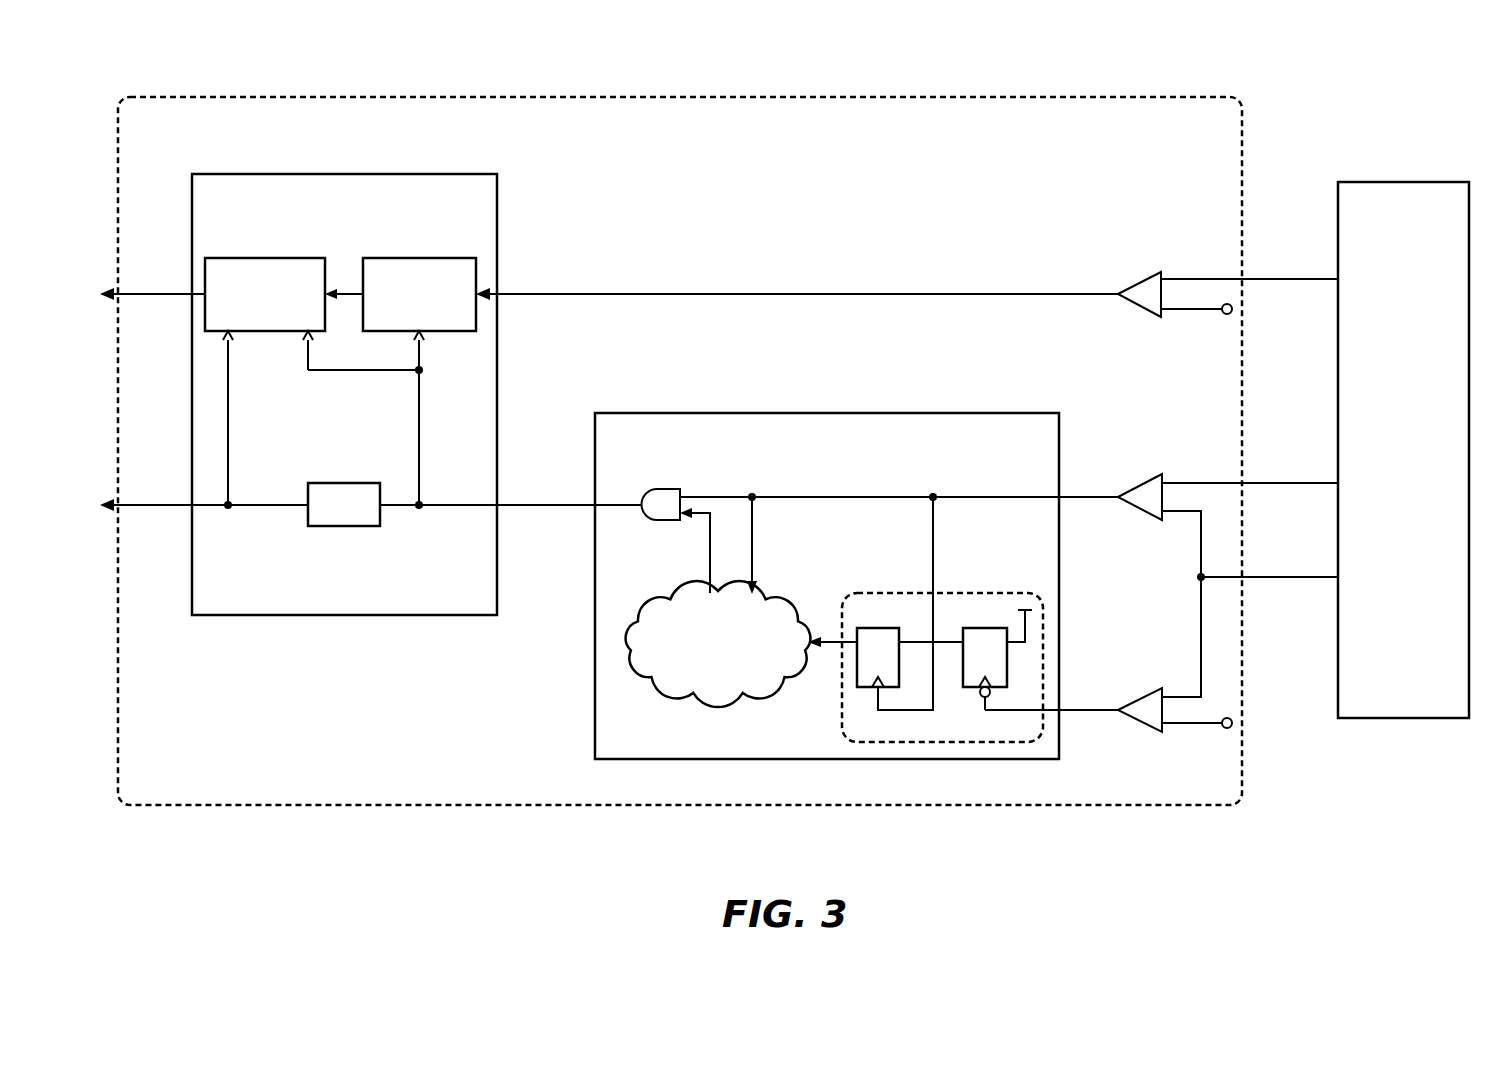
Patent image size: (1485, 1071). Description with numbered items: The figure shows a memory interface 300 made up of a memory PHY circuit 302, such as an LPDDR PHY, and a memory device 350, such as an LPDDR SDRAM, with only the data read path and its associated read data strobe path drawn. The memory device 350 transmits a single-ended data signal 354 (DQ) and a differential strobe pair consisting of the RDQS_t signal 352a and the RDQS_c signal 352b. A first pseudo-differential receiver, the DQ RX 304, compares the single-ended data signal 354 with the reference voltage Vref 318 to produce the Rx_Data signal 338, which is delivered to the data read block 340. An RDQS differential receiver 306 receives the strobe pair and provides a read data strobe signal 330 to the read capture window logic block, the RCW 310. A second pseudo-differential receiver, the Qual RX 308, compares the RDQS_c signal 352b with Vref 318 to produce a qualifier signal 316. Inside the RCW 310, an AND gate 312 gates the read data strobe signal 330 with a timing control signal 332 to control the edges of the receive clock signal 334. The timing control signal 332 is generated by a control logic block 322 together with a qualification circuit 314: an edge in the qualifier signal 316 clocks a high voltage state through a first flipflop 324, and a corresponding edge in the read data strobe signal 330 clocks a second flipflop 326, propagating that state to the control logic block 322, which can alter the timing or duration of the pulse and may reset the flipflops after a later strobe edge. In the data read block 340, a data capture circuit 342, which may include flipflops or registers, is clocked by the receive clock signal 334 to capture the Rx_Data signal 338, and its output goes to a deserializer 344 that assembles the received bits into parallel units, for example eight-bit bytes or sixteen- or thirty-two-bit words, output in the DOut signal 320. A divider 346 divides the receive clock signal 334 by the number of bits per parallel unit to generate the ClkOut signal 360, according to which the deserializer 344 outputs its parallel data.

The memory interface 300 is at (170, 52).
The memory PHY circuit 302 is at (680, 451).
The DQ RX pseudo-differential receiver 304 is at (1131, 284).
The RDQS differential receiver 306 is at (1142, 486).
The Qual RX pseudo-differential receiver 308 is at (1148, 693).
The read capture window logic block (RCW) 310 is at (827, 586).
The AND gate 312 is at (674, 489).
The qualification circuit 314 is at (906, 593).
The qualifier signal 316 is at (1006, 711).
The reference voltage Vref 318 is at (1196, 517).
The DOut signal 320 is at (152, 294).
The control logic block 322 is at (718, 644).
The first flipflop 324 is at (978, 628).
The second flipflop 326 is at (866, 688).
The read data strobe signal 330 is at (866, 499).
The timing control signal 332 is at (710, 576).
The receive clock signal 334 is at (511, 507).
The Rx_Data signal 338 is at (797, 296).
The data read block 340 is at (344, 394).
The data capture circuit 342 is at (418, 258).
The deserializer 344 is at (238, 258).
The divider 346 is at (376, 527).
The memory device 350 is at (1403, 450).
The RDQS_t signal 352a is at (1250, 485).
The RDQS_c signal 352b is at (1250, 604).
The single-ended data signal 354 is at (1329, 278).
The ClkOut signal 360 is at (204, 506).